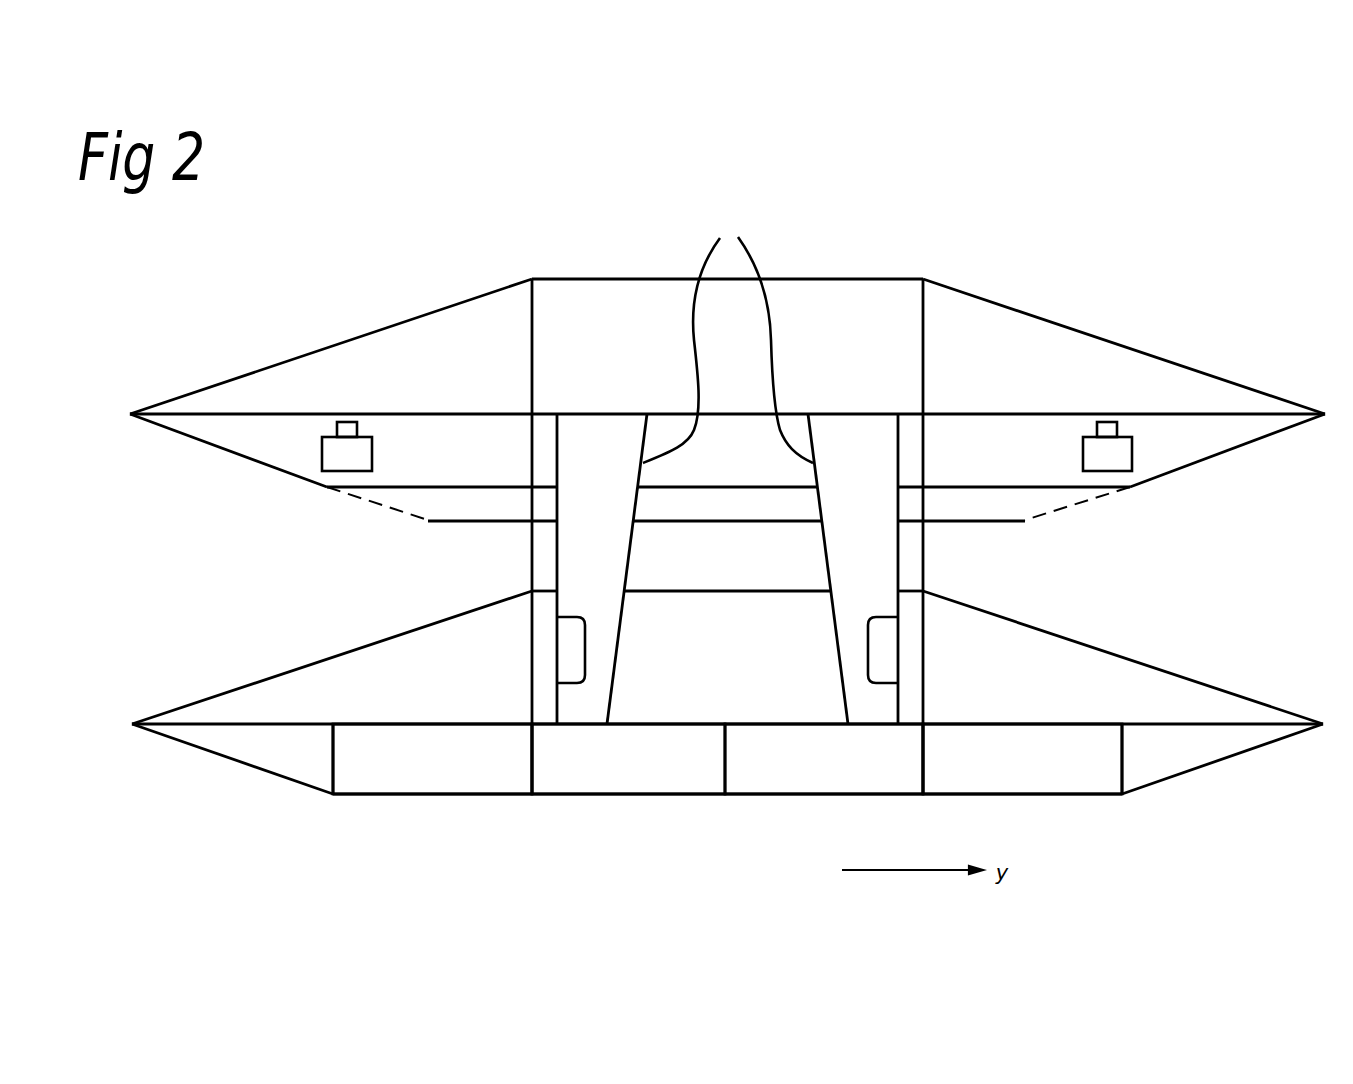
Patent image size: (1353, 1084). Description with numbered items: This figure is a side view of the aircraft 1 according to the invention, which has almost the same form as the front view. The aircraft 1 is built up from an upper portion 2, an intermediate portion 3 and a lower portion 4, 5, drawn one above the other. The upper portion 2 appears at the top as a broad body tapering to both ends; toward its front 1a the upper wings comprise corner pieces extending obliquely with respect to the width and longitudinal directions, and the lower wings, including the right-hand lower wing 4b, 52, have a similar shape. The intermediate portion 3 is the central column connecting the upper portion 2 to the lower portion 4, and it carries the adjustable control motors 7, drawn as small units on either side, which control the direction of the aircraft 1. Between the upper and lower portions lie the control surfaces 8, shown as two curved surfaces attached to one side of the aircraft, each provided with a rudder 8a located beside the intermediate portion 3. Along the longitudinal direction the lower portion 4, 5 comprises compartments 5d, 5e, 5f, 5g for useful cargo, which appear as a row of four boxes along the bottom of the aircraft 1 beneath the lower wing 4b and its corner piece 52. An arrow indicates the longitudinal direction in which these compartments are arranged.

The aircraft 1 is at (1030, 193).
The front 1a is at (144, 388).
The upper portion 2 is at (897, 278).
The intermediate portion 3 is at (722, 564).
The lower portion 4 is at (1200, 682).
The right-hand lower wing 4b is at (409, 682).
The lower portion 5 is at (1208, 767).
The compartment 5d is at (409, 768).
The compartment 5e is at (600, 772).
The compartment 5f is at (838, 772).
The compartment 5g is at (993, 772).
The right-hand lower wing 52 is at (260, 747).
The control motor 7 is at (333, 455).
The control surface 8 is at (728, 337).
The rudder 8a is at (573, 645).